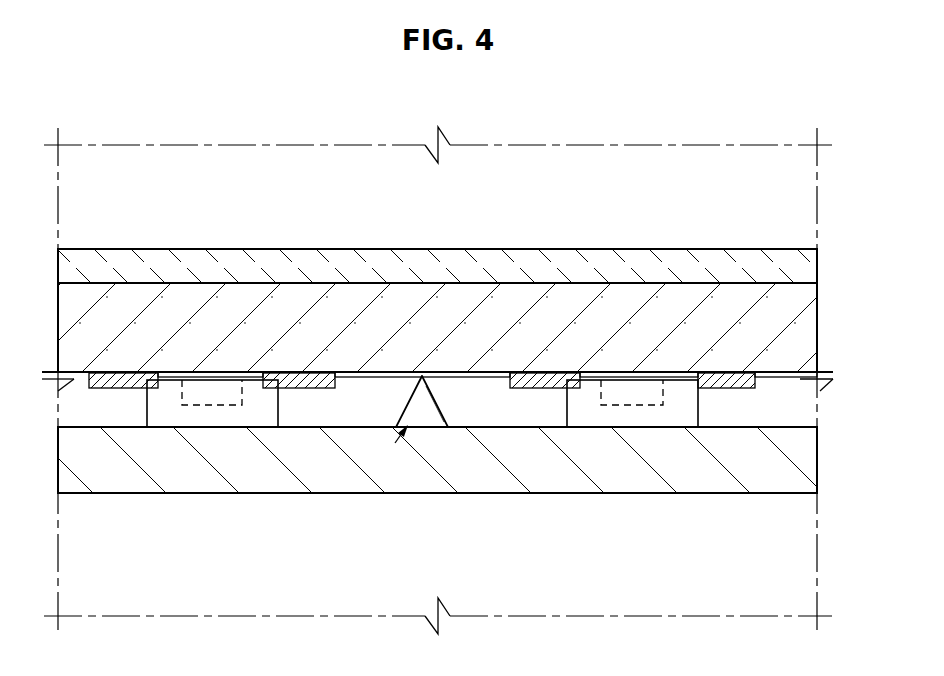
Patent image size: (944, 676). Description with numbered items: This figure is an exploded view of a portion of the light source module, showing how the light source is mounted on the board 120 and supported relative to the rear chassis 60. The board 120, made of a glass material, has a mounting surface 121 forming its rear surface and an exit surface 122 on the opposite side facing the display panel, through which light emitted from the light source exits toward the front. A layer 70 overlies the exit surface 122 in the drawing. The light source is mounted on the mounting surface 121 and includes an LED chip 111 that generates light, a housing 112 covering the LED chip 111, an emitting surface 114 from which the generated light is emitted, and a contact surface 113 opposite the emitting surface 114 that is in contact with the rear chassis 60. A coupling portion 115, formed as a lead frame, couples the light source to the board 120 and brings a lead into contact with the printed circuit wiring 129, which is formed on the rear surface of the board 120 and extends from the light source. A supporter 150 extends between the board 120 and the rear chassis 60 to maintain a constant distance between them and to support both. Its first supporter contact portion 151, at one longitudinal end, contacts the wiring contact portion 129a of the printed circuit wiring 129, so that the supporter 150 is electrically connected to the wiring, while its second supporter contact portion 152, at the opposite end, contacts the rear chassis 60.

The rear chassis 60 is at (600, 472).
The cover layer 70 is at (313, 258).
The LED chip 111 is at (206, 400).
The housing 112 is at (260, 412).
The contact surface 113 is at (170, 428).
The emitting surface 114 is at (203, 371).
The coupling portion 115 is at (305, 384).
The board 120 is at (805, 324).
The mounting surface 121 is at (527, 372).
The exit surface 122 is at (740, 280).
The printed circuit wiring 129 is at (357, 378).
The wiring contact portion 129a is at (418, 375).
The supporter 150 is at (395, 443).
The first supporter contact portion 151 is at (422, 376).
The second supporter contact portion 152 is at (437, 427).